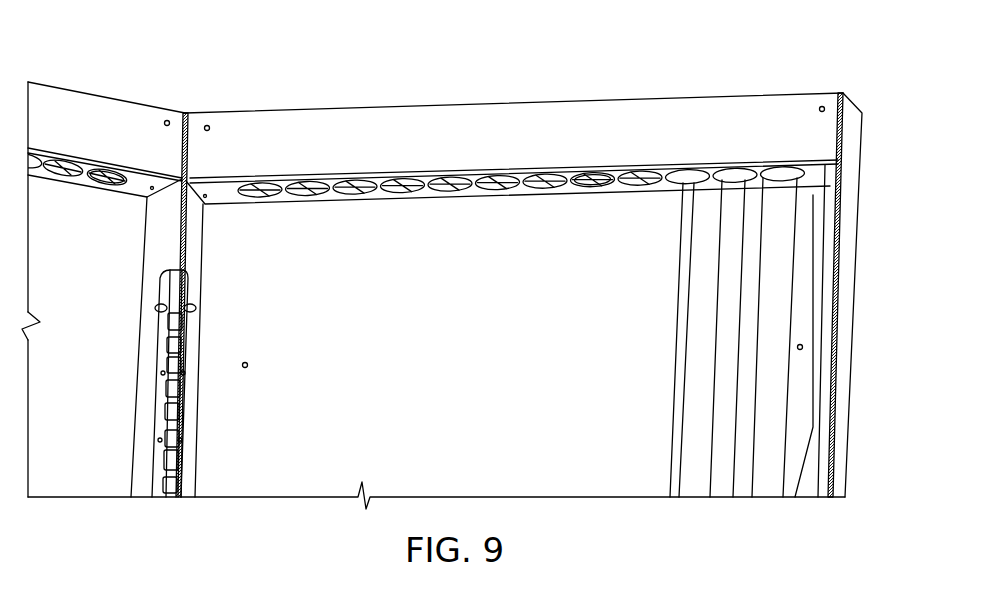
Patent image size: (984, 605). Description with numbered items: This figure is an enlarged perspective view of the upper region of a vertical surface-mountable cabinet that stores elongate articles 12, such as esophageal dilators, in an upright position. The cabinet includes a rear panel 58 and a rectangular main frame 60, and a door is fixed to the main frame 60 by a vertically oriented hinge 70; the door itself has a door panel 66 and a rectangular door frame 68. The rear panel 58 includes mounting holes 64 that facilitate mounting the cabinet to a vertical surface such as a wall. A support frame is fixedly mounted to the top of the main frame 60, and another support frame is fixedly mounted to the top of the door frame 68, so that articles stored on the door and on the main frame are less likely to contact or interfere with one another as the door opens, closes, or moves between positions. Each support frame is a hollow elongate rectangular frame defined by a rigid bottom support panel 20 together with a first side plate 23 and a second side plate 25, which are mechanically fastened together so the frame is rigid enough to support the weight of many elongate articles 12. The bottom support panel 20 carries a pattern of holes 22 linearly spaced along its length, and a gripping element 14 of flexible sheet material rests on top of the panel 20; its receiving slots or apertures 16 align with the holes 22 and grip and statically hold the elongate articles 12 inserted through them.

The elongate articles 12 is at (727, 382).
The gripping element 14 is at (50, 170).
The receiving slots or apertures 16 is at (112, 173).
The bottom support panel 20 is at (137, 182).
The holes 22 is at (98, 170).
The first side plate 23 is at (613, 127).
The second side plate 25 is at (92, 118).
The rear panel 58 is at (514, 365).
The main frame 60 is at (837, 385).
The mounting holes 64 is at (248, 365).
The door panel 66 is at (82, 400).
The door frame 68 is at (162, 240).
The hinge 70 is at (175, 460).